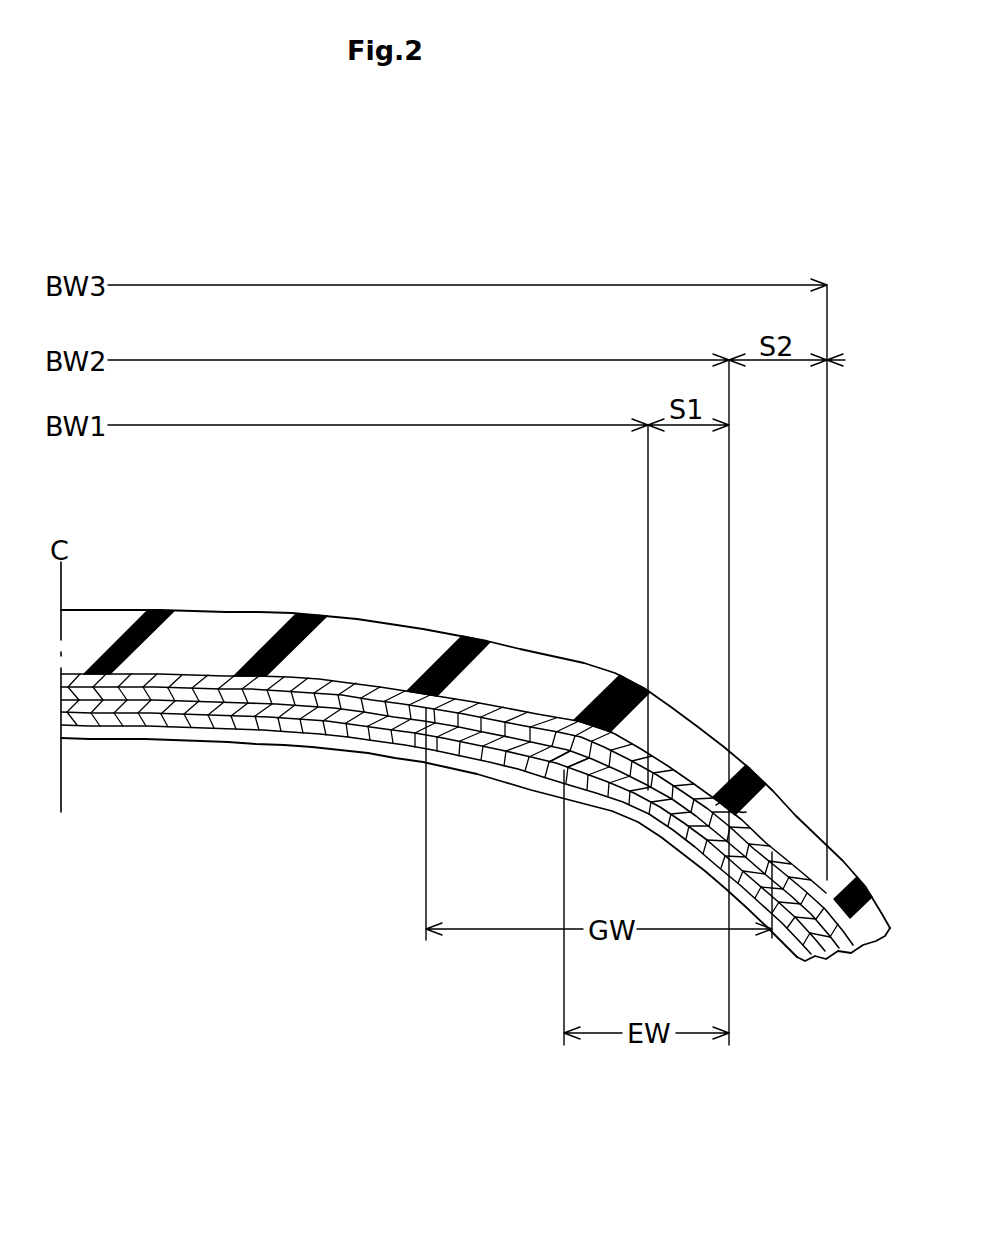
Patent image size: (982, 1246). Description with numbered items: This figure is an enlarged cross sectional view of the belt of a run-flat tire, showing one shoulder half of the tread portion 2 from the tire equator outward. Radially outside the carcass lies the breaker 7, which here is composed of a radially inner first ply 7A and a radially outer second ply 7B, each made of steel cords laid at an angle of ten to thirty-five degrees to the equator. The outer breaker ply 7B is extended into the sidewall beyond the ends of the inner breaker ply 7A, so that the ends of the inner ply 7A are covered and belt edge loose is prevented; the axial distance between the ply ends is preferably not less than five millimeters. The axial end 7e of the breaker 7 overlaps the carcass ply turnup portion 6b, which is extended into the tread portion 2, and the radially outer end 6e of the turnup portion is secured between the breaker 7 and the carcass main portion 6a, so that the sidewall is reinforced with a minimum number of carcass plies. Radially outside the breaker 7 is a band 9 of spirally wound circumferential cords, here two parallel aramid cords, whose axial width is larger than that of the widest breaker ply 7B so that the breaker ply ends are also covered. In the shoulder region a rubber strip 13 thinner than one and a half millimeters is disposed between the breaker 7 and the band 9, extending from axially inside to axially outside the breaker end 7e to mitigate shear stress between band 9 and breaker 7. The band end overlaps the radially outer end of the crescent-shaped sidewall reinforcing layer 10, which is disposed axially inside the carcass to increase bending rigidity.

The tread portion 2 is at (308, 598).
The band 9 is at (198, 682).
The rubber strip 13 is at (528, 722).
The breaker 7 is at (450, 819).
The radially inner first breaker ply 7A is at (257, 708).
The radially outer second breaker ply 7B is at (343, 703).
The axial end of the breaker 7e is at (729, 821).
The carcass main portion 6a is at (193, 720).
The carcass ply turnup portion 6b is at (597, 787).
The radially outer end of the turnup portion 6e is at (552, 775).
The sidewall reinforcing layer 10 is at (807, 932).